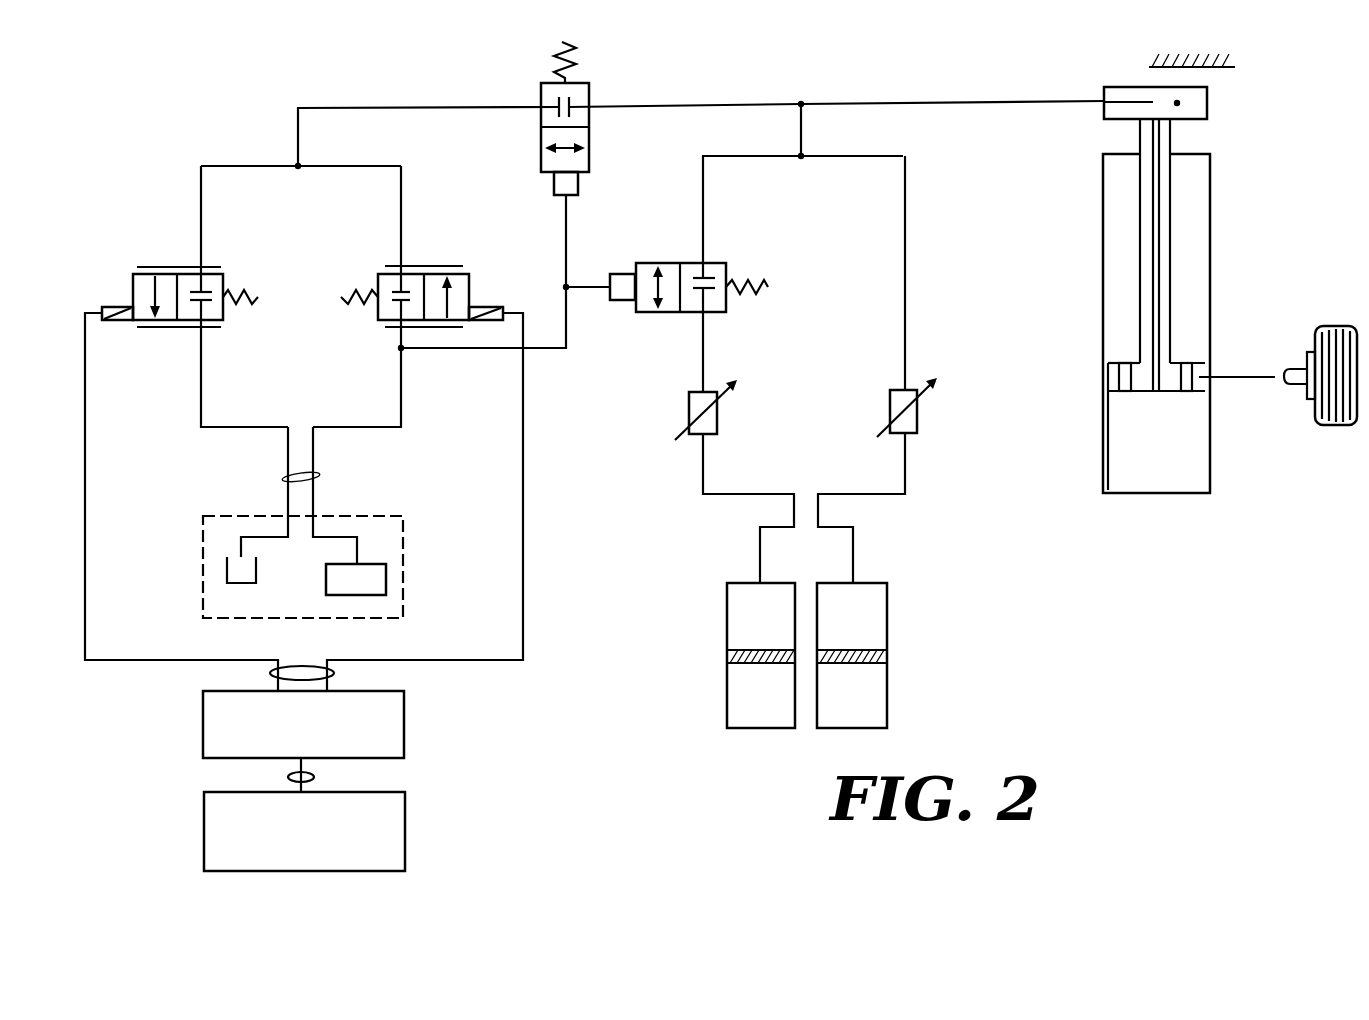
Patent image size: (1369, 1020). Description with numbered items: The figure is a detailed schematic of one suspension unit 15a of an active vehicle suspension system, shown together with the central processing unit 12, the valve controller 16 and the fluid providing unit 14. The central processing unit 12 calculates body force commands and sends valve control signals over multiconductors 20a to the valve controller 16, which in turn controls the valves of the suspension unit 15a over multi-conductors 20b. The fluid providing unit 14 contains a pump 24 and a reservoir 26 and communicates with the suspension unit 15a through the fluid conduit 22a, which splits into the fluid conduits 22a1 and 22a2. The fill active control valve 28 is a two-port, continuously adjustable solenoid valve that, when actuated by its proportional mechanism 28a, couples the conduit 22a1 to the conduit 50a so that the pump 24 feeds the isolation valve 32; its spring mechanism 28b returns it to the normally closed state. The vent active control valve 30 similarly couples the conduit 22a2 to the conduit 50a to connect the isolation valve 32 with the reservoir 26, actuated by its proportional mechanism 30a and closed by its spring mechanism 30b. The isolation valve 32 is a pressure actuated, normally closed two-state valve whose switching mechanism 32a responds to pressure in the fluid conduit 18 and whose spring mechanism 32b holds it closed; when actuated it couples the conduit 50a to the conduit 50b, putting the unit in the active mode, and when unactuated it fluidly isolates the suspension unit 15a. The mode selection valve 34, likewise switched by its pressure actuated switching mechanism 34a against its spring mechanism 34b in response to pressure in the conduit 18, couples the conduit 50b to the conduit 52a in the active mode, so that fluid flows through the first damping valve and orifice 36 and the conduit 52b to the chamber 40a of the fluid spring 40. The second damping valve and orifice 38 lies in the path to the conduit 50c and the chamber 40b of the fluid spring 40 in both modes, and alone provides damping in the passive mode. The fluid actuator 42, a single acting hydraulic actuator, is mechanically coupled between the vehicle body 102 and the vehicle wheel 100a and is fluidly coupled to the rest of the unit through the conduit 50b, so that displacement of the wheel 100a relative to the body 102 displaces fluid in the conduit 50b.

The central processing unit 12 is at (407, 815).
The fluid providing unit 14 is at (336, 567).
The suspension unit 15a is at (944, 59).
The valve controller 16 is at (405, 712).
The fluid conduit 18 is at (553, 350).
The multiconductors 20a is at (313, 775).
The multi-conductors 20b is at (338, 672).
The fluid conduit 22a is at (320, 476).
The fluid conduit 22a1 is at (402, 413).
The fluid conduit 22a2 is at (200, 392).
The pump 24 is at (369, 590).
The reservoir 26 is at (257, 570).
The fill active control valve 28 is at (434, 257).
The proportional mechanism 28a is at (499, 308).
The spring mechanism 28b is at (368, 302).
The vent active control valve 30 is at (193, 271).
The proportional mechanism 30a is at (121, 322).
The spring mechanism 30b is at (257, 298).
The isolation valve 32 is at (570, 116).
The pressure actuated switching mechanism 32a is at (551, 182).
The spring mechanism 32b is at (566, 48).
The mode selection valve 34 is at (710, 256).
The pressure actuated switching mechanism 34a is at (624, 273).
The spring mechanism 34b is at (770, 292).
The first damping valve and orifice 36 is at (734, 418).
The second damping valve and orifice 38 is at (874, 398).
The fluid spring 40 is at (810, 655).
The chamber 40a is at (726, 612).
The chamber 40b is at (887, 698).
The fluid actuator 42 is at (1083, 481).
The fluid conduit 50a is at (388, 108).
The fluid conduit 50b is at (665, 105).
The fluid conduit 50c is at (907, 458).
The fluid conduit 52a is at (702, 336).
The fluid conduit 52b is at (702, 473).
The vehicle wheel 100a is at (1316, 337).
The vehicle body 102 is at (1177, 103).